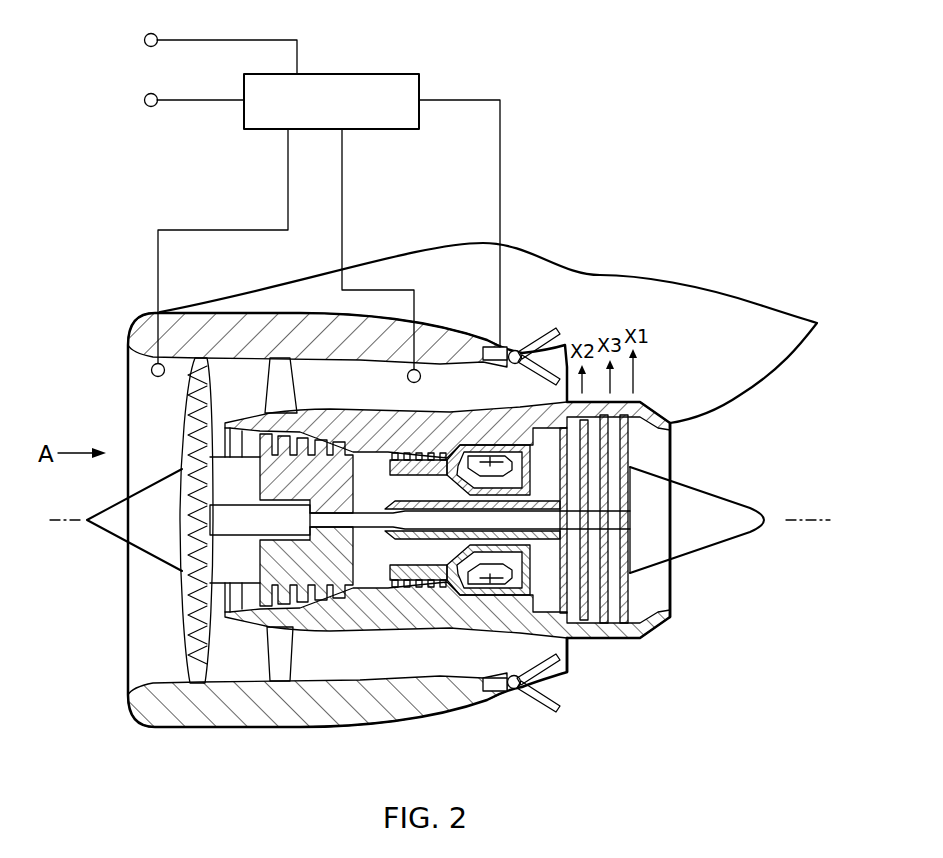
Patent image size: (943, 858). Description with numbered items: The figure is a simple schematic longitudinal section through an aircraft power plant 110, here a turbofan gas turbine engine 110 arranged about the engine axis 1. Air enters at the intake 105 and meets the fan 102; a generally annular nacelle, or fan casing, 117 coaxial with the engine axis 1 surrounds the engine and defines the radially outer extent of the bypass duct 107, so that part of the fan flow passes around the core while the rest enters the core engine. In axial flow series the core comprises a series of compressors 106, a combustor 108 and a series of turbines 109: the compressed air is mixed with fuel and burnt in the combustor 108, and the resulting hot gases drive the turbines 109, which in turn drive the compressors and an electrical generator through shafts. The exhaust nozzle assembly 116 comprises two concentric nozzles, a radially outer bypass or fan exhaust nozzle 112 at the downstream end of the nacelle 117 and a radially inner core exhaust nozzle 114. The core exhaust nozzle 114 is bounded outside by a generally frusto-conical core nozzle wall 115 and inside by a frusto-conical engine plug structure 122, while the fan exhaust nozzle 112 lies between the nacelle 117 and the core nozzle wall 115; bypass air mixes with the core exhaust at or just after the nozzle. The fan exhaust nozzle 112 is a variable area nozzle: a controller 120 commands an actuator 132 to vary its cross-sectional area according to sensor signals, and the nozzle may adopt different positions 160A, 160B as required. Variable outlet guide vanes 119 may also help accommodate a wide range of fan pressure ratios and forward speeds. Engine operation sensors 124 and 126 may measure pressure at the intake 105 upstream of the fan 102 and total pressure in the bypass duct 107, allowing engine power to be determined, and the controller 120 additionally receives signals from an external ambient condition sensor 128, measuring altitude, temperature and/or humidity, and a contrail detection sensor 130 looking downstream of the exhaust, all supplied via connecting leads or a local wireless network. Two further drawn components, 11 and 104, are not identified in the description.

The engine axis 1 is at (82, 525).
The shaft 11 is at (437, 520).
The fan 102 is at (186, 440).
The low pressure compressor 104 is at (318, 625).
The intake 105 is at (138, 400).
The compressors 106 is at (412, 586).
The bypass duct 107 is at (285, 398).
The combustor 108 is at (497, 591).
The turbines 109 is at (572, 442).
The power plant 110 is at (112, 674).
The bypass exhaust nozzle 112 is at (567, 673).
The core exhaust nozzle 114 is at (668, 421).
The core nozzle wall 115 is at (682, 390).
The exhaust nozzle assembly 116 is at (573, 652).
The nacelle 117 is at (483, 343).
The variable outlet guide vanes 119 is at (268, 653).
The controller 120 is at (372, 210).
The engine plug structure 122 is at (746, 505).
The engine operation sensor 124 is at (150, 366).
The engine operation sensor 126 is at (421, 379).
The ambient condition sensor 128 is at (145, 36).
The contrail detection sensor 130 is at (145, 96).
The actuator 132 is at (555, 328).
The nozzle position 160A is at (540, 690).
The nozzle position 160B is at (550, 695).